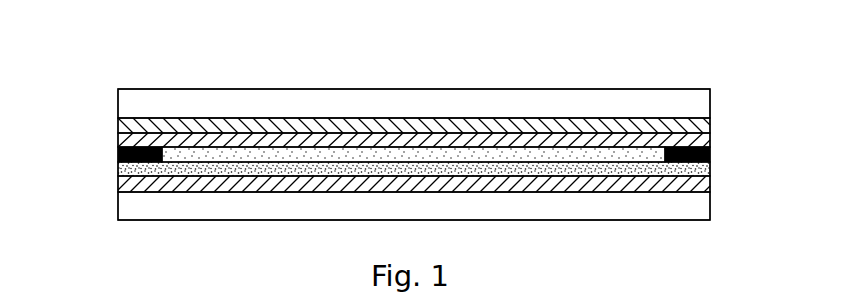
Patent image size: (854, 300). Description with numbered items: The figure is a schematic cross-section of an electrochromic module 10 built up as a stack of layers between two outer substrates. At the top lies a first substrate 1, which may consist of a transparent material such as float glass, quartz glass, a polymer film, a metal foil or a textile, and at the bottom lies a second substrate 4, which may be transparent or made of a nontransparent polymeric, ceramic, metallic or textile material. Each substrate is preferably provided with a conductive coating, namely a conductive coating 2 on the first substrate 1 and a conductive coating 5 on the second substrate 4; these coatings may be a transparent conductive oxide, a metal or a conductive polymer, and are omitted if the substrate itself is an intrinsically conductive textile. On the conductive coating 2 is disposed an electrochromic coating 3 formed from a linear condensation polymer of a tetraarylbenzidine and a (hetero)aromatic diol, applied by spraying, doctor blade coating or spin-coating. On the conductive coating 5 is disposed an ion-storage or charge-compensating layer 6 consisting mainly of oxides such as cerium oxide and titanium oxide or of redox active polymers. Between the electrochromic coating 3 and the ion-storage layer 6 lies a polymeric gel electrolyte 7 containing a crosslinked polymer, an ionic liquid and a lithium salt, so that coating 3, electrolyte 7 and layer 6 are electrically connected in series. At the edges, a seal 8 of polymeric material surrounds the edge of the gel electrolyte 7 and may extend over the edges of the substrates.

The electrochromic module 10 is at (427, 60).
The first substrate 1 is at (118, 103).
The conductive coating 2 is at (118, 122).
The coating 3 is at (118, 141).
The polymeric gel electrolyte 7 is at (267, 158).
The seal 8 is at (712, 155).
The ion-storage or charge-compensating layer 6 is at (118, 167).
The conductive coating 5 is at (118, 183).
The second substrate 4 is at (118, 207).